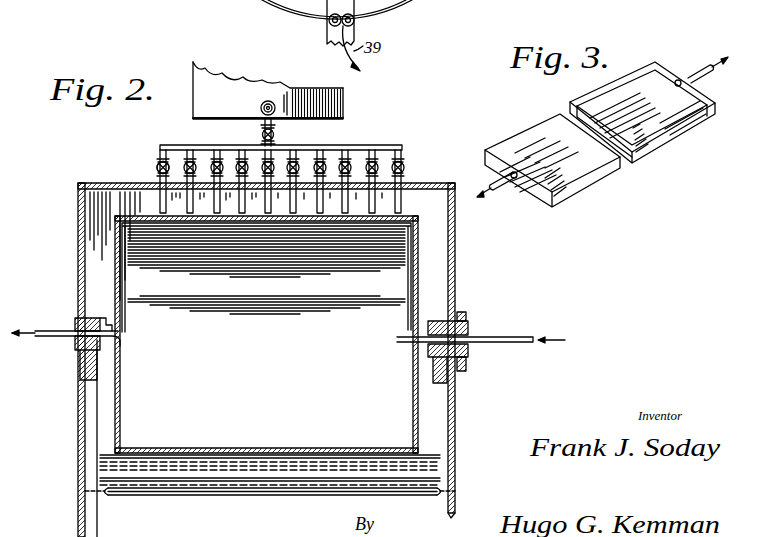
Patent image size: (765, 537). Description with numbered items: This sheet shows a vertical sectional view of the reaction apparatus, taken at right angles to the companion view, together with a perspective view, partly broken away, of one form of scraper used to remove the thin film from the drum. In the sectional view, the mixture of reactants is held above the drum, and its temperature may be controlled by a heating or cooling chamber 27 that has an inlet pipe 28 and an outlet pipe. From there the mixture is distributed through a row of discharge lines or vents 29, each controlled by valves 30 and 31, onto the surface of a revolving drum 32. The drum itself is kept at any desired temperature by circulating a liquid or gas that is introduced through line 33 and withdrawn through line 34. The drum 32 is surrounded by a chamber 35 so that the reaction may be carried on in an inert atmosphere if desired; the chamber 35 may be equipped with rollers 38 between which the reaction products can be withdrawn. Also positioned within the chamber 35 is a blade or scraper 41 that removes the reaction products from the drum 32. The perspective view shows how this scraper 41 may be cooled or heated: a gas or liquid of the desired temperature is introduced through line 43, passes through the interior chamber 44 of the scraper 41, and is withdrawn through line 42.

In FIG. 2, the heating or cooling chamber 27 is at (192, 97).
In FIG. 2, the inlet pipe 28 is at (269, 100).
In FIG. 2, the discharge lines or vents 29 is at (325, 167).
In FIG. 2, the valve 30 is at (262, 139).
In FIG. 2, the valve 31 is at (168, 178).
In FIG. 2, the revolving drum 32 is at (418, 288).
In FIG. 2, the line 33 is at (490, 337).
In FIG. 2, the line 34 is at (55, 331).
In FIG. 2, the chamber 35 is at (456, 240).
In FIG. 2, the rollers 38 is at (174, 495).
In FIG. 2, the blade or scraper 41 is at (426, 470).
In FIG. 3, the blade or scraper 41 is at (533, 142).
In FIG. 3, the line 42 is at (504, 176).
In FIG. 3, the line 43 is at (697, 72).
In FIG. 3, the interior chamber 44 is at (588, 110).